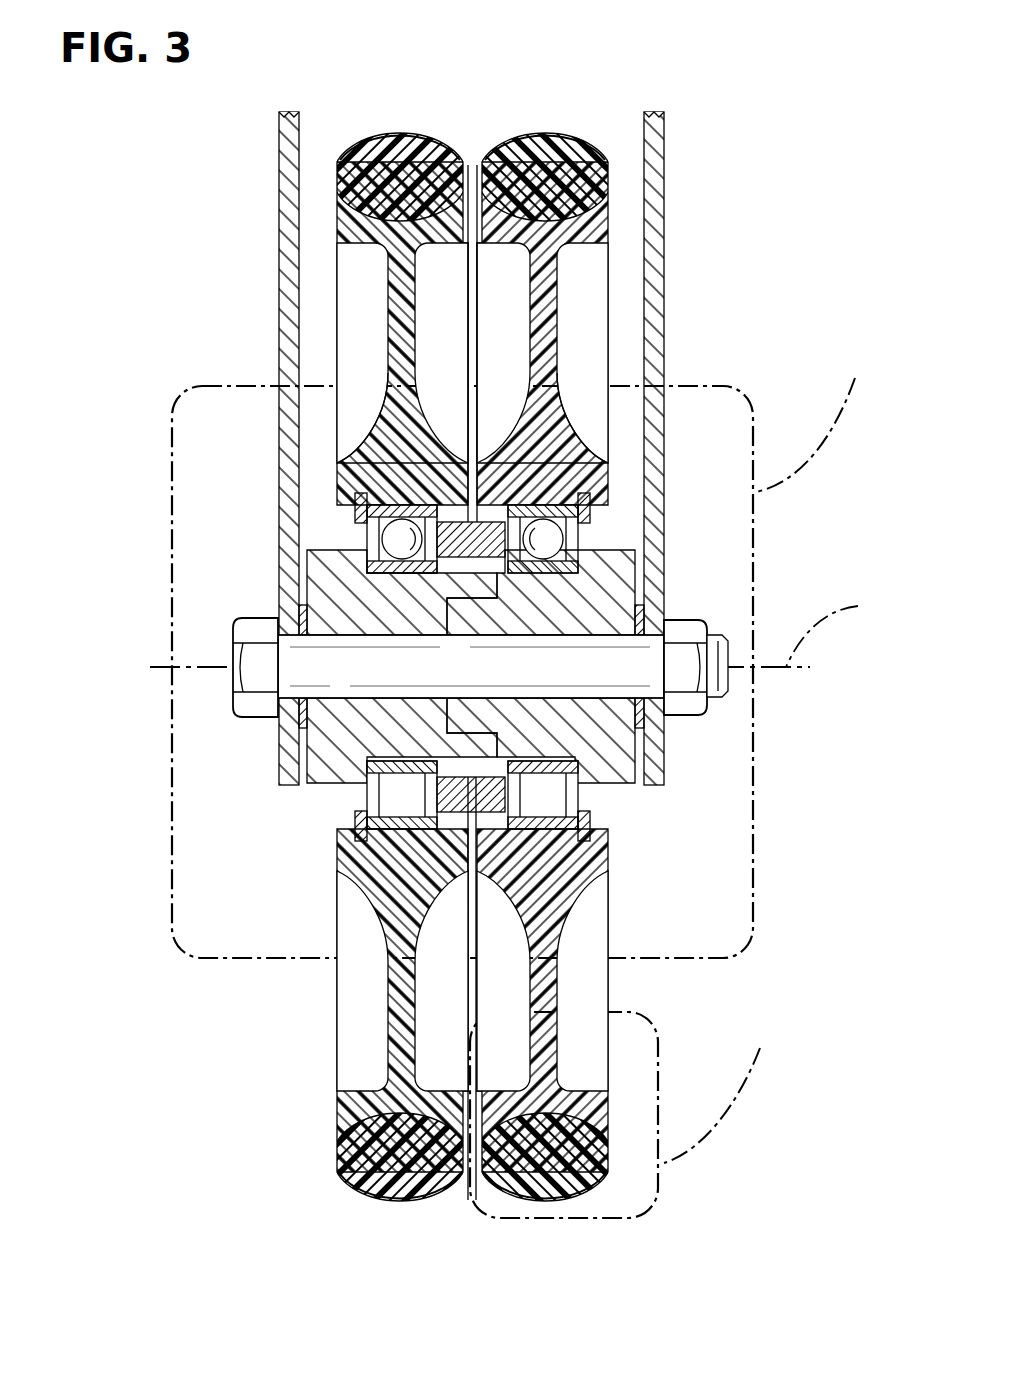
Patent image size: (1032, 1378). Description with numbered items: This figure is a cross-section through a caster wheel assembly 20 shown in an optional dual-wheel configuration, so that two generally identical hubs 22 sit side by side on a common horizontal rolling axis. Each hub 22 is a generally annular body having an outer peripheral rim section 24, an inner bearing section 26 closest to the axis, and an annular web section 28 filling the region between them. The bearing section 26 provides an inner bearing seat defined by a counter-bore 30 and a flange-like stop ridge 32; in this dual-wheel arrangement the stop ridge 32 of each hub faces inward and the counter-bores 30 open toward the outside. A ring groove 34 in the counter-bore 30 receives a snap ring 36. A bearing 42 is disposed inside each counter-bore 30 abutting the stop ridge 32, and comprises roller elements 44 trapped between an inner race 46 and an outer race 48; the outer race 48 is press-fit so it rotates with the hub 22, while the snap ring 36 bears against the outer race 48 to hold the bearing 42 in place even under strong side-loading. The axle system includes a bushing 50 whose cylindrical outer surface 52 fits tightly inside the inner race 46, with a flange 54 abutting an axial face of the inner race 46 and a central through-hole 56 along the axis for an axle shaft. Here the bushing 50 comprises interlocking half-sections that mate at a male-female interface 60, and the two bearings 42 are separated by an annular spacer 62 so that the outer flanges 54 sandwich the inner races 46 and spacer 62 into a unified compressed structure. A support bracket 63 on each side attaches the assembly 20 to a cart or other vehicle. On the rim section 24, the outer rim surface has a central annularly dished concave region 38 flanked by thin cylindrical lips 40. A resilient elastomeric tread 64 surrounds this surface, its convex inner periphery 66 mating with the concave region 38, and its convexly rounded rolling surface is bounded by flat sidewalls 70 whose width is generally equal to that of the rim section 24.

The caster wheel assembly 20 is at (150, 207).
The hub 22 is at (336, 215).
The rim section 24 is at (336, 1130).
The bearing section 26 is at (365, 463).
The web section 28 is at (385, 342).
The counter-bore 30 is at (365, 522).
The stop ridge 32 is at (472, 560).
The ring groove 34 is at (358, 830).
The snap ring 36 is at (380, 828).
The concave region 38 is at (393, 215).
The cylindrical lips 40 is at (343, 152).
The bearing 42 is at (383, 836).
The roller elements 44 is at (392, 794).
The inner race 46 is at (332, 578).
The outer race 48 is at (362, 456).
The bushing 50 is at (306, 562).
The cylindrical outer surface 52 is at (400, 875).
The flange 54 is at (357, 510).
The through-hole 56 is at (335, 680).
The male-female interface 60 is at (412, 560).
The spacer 62 is at (545, 875).
The support bracket 63 is at (281, 150).
The tread 64 is at (363, 1202).
The convex inner periphery 66 is at (356, 1090).
The sidewalls 70 is at (348, 1168).